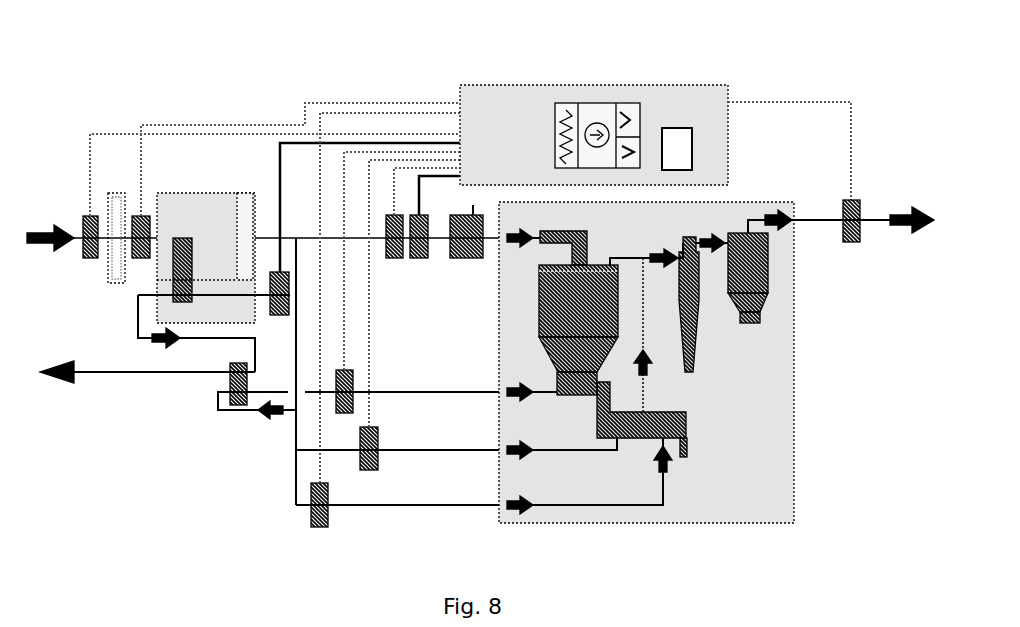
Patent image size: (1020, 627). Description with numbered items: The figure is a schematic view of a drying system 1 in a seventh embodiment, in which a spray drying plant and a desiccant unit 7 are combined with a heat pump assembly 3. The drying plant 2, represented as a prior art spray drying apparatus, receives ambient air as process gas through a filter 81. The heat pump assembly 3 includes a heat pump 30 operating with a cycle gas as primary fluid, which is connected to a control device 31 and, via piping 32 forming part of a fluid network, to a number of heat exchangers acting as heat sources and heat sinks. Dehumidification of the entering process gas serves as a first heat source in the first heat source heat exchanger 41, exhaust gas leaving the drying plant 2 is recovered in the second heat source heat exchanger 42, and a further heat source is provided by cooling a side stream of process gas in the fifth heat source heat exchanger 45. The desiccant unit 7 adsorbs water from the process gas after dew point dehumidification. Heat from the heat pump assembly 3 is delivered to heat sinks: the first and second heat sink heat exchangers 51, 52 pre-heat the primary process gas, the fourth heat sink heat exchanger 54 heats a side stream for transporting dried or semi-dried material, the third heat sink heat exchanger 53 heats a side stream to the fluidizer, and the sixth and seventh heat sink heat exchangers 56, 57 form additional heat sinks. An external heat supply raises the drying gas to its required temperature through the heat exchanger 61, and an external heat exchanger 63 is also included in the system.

The drying system 1 is at (103, 57).
The drying plant 2 is at (790, 447).
The heat pump assembly 3 is at (614, 105).
The desiccant unit 7 is at (178, 246).
The heat pump 30 is at (587, 110).
The control device 31 is at (700, 153).
The piping 32 is at (764, 96).
The first heat source heat exchanger 41 is at (146, 212).
The second heat source heat exchanger 42 is at (850, 240).
The fifth heat source heat exchanger 45 is at (313, 496).
The first heat sink heat exchanger 51 is at (418, 258).
The second heat sink heat exchanger 52 is at (397, 258).
The third heat sink heat exchanger 53 is at (368, 444).
The fourth heat sink heat exchanger 54 is at (345, 393).
The sixth heat sink heat exchanger 56 is at (90, 212).
The seventh heat sink heat exchanger 57 is at (278, 312).
The heat exchanger for external heat supply 61 is at (474, 240).
The external heat exchanger 63 is at (239, 390).
The filter 81 is at (118, 266).